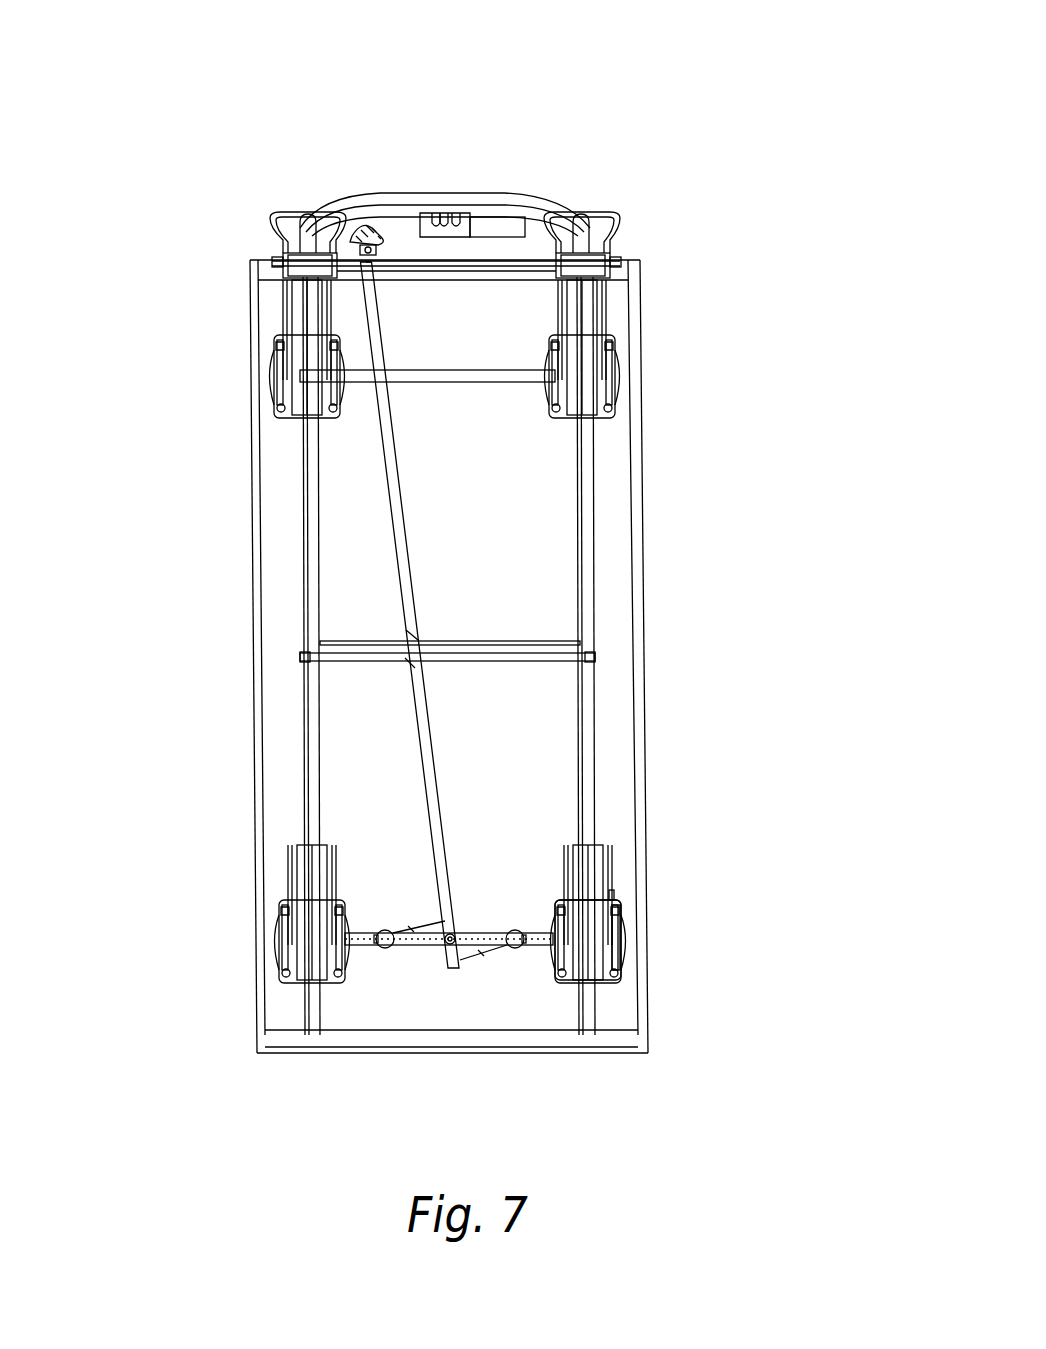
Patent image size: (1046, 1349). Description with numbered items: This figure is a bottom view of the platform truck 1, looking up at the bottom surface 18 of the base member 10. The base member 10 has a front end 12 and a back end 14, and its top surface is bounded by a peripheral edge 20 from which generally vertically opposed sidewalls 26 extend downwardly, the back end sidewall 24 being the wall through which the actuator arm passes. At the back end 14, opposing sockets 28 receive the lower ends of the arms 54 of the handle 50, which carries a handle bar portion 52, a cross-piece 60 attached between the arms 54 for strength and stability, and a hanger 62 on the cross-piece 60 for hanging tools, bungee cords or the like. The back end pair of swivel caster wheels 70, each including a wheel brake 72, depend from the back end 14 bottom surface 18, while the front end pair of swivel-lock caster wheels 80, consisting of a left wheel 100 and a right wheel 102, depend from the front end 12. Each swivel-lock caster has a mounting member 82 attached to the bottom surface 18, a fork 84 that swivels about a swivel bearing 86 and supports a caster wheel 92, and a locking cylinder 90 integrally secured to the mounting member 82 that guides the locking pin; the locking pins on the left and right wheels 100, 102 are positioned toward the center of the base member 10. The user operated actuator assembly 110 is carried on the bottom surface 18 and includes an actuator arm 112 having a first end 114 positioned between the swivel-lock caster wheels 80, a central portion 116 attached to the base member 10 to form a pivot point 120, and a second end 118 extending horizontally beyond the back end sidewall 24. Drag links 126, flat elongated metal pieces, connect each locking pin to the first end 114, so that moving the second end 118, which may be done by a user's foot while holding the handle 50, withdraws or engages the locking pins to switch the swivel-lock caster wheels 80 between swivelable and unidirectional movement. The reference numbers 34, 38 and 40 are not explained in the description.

The platform truck 1 is at (238, 140).
The base member 10 is at (592, 508).
The front end 12 is at (283, 1053).
The back end 14 is at (503, 270).
The bottom surface 18 is at (538, 470).
The peripheral edge 20 is at (252, 525).
The back end sidewall 24 is at (445, 268).
The sidewalls 26 is at (642, 457).
The sockets 28 is at (585, 235).
The handle 34 is at (397, 262).
The cross rod 38 is at (520, 640).
The cross bar 40 is at (545, 655).
The handle 50 is at (437, 197).
The handle bar portion 52 is at (530, 220).
The arms 54 is at (308, 220).
The cross-piece 60 is at (500, 205).
The hanger 62 is at (455, 215).
The swivel caster wheels 70 is at (303, 385).
The wheel brake 72 is at (267, 228).
The swivel-lock caster wheels 80 is at (312, 920).
The mounting member 82 is at (618, 925).
The fork 84 is at (612, 893).
The swivel bearing 86 is at (617, 948).
The locking cylinder 90 is at (350, 930).
The caster wheel 92 is at (588, 860).
The left wheel 100 is at (310, 857).
The right wheel 102 is at (597, 972).
The actuator assembly 110 is at (398, 522).
The actuator arm 112 is at (398, 585).
The first end 114 is at (452, 946).
The central portion 116 is at (412, 635).
The second end 118 is at (360, 230).
The pivot point 120 is at (410, 663).
The drag links 126 is at (410, 929).